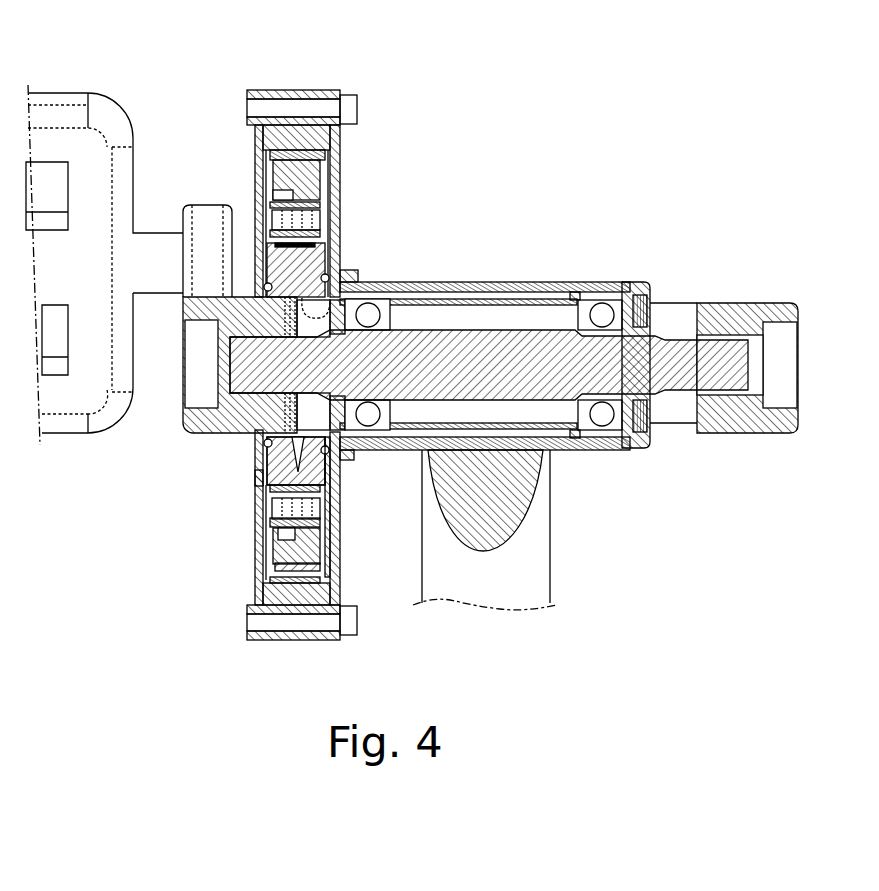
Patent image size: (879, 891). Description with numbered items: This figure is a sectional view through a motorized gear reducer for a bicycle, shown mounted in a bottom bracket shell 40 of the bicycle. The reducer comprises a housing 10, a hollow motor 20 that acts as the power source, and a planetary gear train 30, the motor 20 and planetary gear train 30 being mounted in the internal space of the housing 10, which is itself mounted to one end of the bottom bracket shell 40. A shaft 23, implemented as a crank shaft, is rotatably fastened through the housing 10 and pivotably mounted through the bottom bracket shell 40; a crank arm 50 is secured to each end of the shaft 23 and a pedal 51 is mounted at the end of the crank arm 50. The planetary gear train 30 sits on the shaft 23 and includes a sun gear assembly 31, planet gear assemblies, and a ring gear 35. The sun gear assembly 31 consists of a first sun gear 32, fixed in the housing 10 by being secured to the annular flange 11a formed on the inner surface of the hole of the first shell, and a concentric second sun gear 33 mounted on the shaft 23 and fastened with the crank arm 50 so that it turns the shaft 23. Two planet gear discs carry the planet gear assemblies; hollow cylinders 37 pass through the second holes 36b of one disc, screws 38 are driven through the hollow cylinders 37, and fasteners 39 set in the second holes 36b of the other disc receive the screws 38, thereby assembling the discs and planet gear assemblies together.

The housing 10 is at (284, 78).
The pedal 51 is at (62, 110).
The motor 20 is at (255, 130).
The ring gear 35 is at (320, 178).
The annular flange 11a is at (357, 282).
The shaft 23 is at (490, 358).
The crank arm 50 is at (185, 418).
The sun gear assembly 31 is at (190, 449).
The second sun gear 33 is at (290, 468).
The first sun gear 32 is at (252, 478).
The screw 38 is at (320, 507).
The fastener 39 is at (255, 518).
The hollow cylinder 37 is at (288, 530).
The second hole 36b is at (330, 538).
The planetary gear train 30 is at (252, 557).
The bottom bracket shell 40 is at (487, 487).